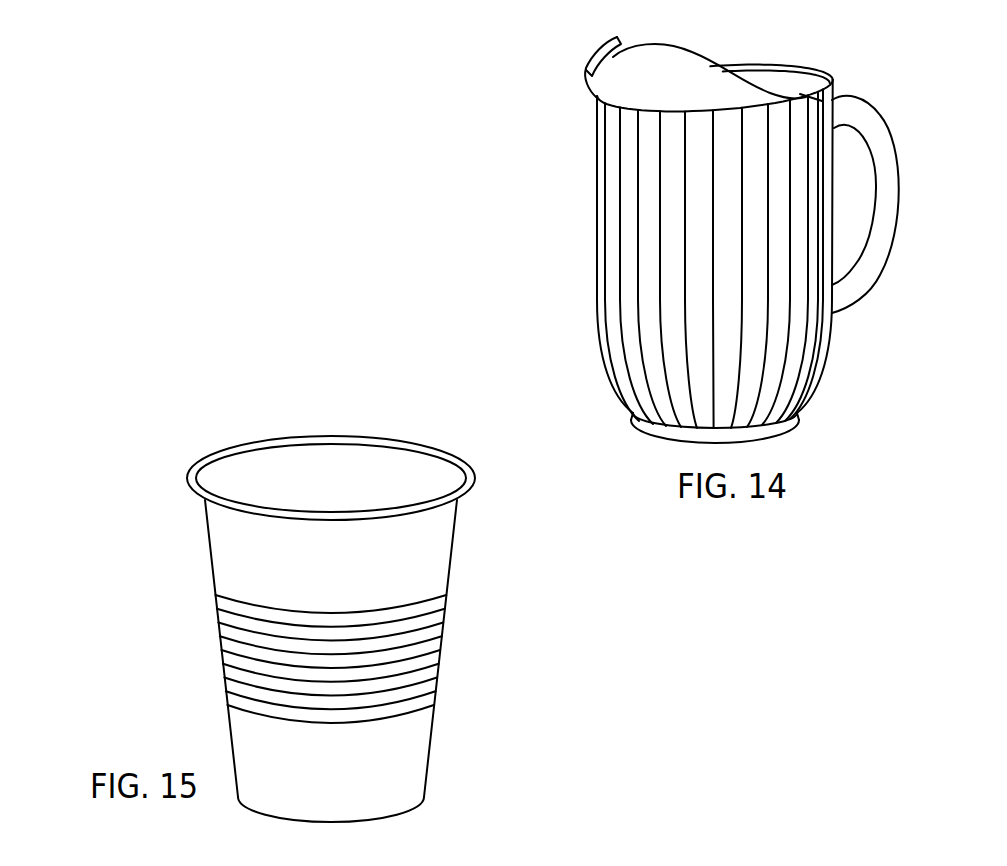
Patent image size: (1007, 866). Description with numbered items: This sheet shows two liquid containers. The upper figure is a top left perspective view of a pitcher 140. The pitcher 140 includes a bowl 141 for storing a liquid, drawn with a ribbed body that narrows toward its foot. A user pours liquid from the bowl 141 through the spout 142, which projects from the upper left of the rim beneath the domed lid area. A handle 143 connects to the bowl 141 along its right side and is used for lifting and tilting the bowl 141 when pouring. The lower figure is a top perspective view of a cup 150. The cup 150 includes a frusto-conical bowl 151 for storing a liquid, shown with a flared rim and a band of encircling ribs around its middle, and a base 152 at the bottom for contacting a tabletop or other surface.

In FIG. 14, the pitcher 140 is at (517, 166).
In FIG. 14, the bowl 141 is at (600, 251).
In FIG. 14, the spout 142 is at (592, 63).
In FIG. 14, the handle 143 is at (872, 110).
In FIG. 15, the cup 150 is at (123, 531).
In FIG. 15, the frusto-conical bowl 151 is at (442, 549).
In FIG. 15, the base 152 is at (421, 806).